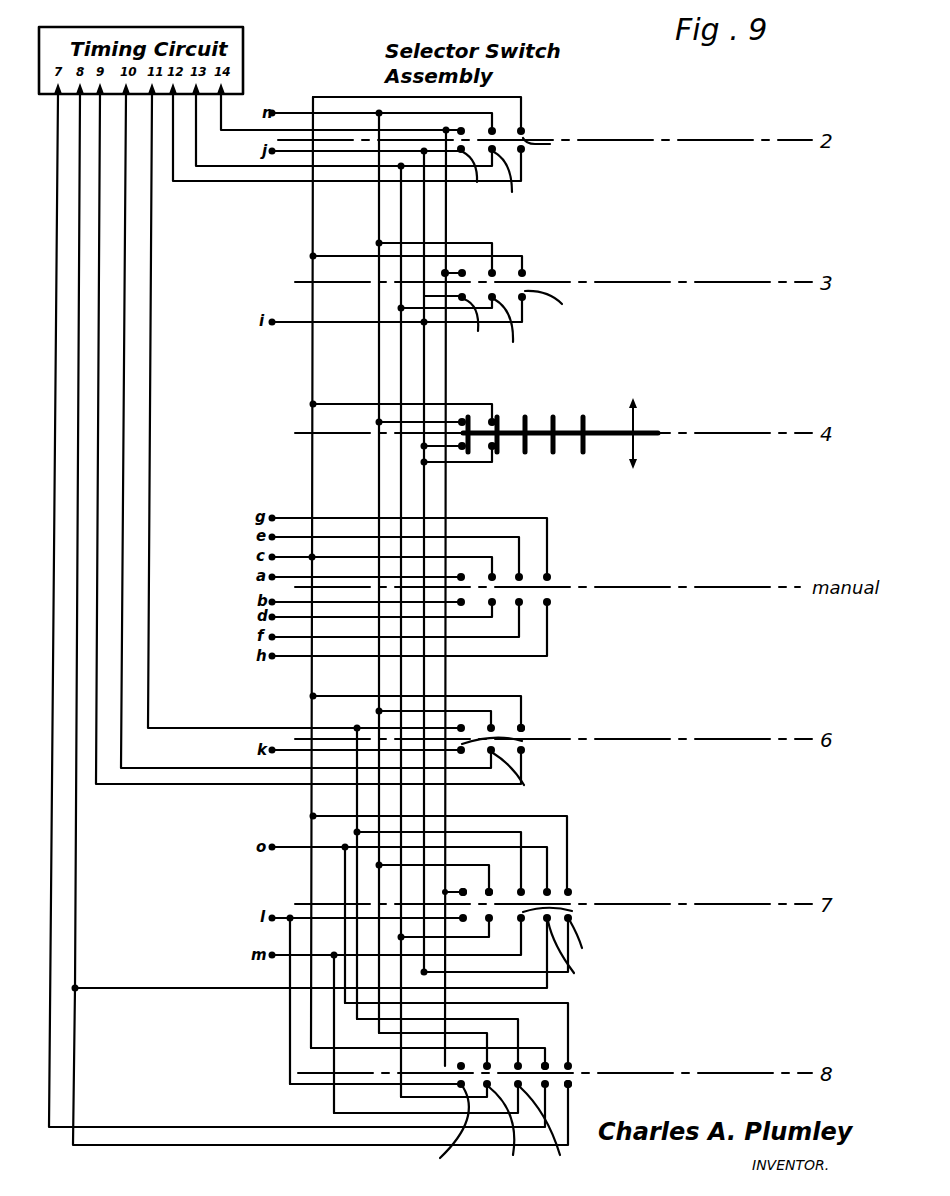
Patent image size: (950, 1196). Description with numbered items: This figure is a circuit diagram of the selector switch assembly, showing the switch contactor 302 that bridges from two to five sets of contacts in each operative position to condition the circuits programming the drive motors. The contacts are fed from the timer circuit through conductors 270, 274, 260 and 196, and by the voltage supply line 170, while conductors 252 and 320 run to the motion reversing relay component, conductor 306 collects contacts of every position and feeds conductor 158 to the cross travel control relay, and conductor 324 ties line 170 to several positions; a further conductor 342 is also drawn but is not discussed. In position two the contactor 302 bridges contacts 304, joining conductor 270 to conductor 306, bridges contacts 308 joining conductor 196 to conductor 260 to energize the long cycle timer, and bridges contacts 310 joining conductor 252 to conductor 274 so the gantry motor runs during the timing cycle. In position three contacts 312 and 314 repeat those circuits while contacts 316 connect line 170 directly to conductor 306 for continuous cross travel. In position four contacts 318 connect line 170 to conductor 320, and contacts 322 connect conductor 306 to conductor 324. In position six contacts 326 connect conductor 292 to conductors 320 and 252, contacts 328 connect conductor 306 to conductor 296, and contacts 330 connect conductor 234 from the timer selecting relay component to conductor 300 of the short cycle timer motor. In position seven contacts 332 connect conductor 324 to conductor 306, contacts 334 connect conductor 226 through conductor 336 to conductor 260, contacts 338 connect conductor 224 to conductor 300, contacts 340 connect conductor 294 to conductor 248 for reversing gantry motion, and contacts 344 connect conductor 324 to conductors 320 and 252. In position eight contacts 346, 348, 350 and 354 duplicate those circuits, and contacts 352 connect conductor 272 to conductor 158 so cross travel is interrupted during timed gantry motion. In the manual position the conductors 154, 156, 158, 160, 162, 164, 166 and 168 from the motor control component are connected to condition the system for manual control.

The conductor 252 is at (302, 98).
The conductor 260 is at (240, 127).
The conductor 274 is at (197, 124).
The conductor 270 is at (183, 182).
The conductor 196 is at (287, 153).
The conductor 272 is at (54, 205).
The conductor 294 is at (79, 893).
The conductor 296 is at (102, 786).
The conductor 292 is at (162, 756).
The conductor 300 is at (150, 491).
The set of contacts 304 is at (554, 153).
The contacts 308 is at (475, 182).
The contacts 310 is at (518, 186).
The contacts 316 is at (566, 305).
The contacts 312 is at (475, 325).
The contacts 314 is at (519, 330).
The voltage supply line 170 is at (285, 326).
The conductor 306 is at (311, 363).
The conductor 320 is at (378, 363).
The contacts 322 is at (490, 421).
The switch contactor 302 is at (598, 418).
The contacts 318 is at (462, 448).
The conductor 166 is at (291, 514).
The conductor 162 is at (286, 522).
The conductor 158 is at (286, 545).
The conductor 154 is at (286, 569).
The conductor 156 is at (286, 597).
The conductor 160 is at (288, 616).
The conductor 164 is at (286, 641).
The conductor 168 is at (295, 663).
The conductor 324 is at (424, 498).
The bus conductor 342 is at (401, 681).
The contacts 328 is at (523, 727).
The conductor 234 is at (276, 755).
The contacts 330 is at (516, 752).
The contacts 326 is at (532, 773).
The conductor 336 is at (446, 797).
The conductor 248 is at (291, 845).
The contacts 334 is at (465, 899).
The contacts 344 is at (492, 912).
The conductor 226 is at (288, 910).
The contacts 338 is at (575, 924).
The contacts 332 is at (596, 943).
The conductor 224 is at (286, 966).
The contacts 340 is at (582, 955).
The contacts 352 is at (549, 1063).
The contacts 354 is at (570, 1075).
The contacts 346 is at (433, 1133).
The contacts 348 is at (509, 1133).
The contacts 350 is at (553, 1133).